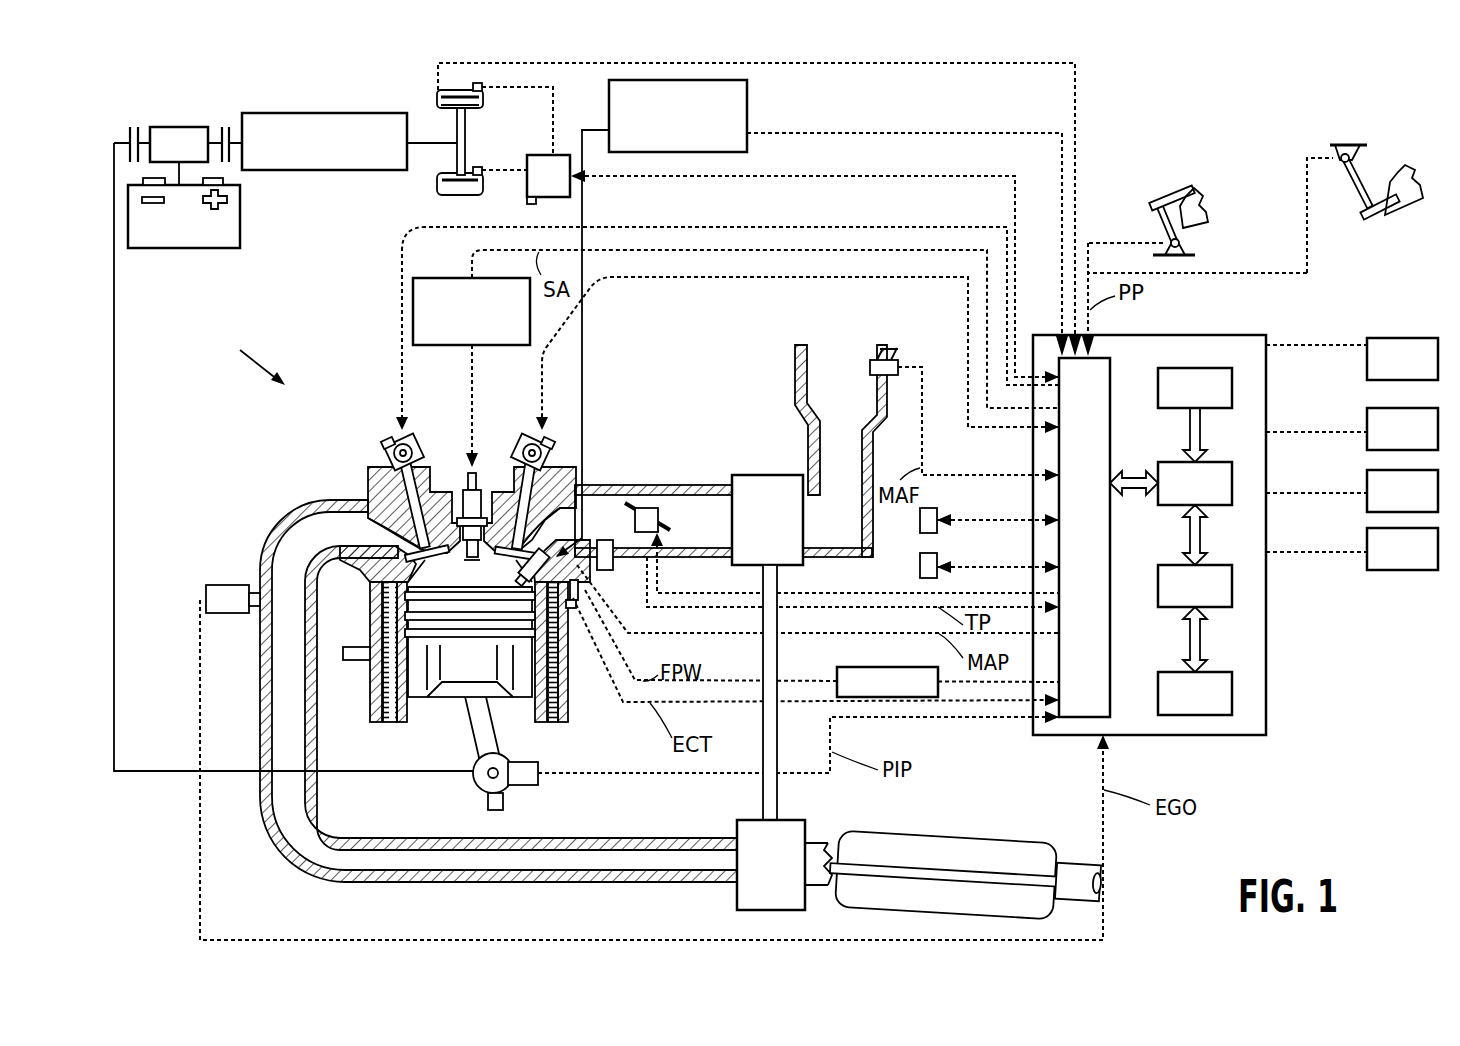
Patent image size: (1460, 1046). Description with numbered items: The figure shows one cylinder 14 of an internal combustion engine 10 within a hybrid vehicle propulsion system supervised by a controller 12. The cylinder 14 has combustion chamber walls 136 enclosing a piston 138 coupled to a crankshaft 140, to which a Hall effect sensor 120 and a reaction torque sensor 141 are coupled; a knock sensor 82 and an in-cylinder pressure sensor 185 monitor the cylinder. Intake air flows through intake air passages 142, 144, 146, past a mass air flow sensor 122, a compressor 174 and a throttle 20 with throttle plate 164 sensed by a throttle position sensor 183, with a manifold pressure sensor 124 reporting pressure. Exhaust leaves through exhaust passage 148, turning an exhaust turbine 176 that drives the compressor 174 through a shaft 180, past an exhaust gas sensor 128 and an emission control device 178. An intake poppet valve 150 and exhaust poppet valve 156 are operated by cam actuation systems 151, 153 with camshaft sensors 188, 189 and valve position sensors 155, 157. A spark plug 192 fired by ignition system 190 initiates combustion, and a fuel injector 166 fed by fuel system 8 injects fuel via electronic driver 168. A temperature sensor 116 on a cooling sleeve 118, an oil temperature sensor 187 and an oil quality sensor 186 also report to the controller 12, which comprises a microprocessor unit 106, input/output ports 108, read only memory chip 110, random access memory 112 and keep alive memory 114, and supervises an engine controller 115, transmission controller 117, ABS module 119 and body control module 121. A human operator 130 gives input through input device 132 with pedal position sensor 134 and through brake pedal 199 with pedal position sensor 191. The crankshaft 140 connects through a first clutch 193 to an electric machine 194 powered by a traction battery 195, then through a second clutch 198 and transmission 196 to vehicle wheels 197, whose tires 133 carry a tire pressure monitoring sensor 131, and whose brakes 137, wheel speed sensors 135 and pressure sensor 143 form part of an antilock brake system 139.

The high pressure fuel system 8 is at (747, 98).
The internal combustion engine 10 is at (252, 355).
The controller 12 is at (1268, 340).
The cylinder 14 is at (372, 590).
The throttle 20 is at (650, 505).
The knock sensor 82 is at (357, 660).
The microprocessor unit 106 is at (1234, 480).
The input/output ports 108 is at (1112, 372).
The read only memory chip 110 is at (1234, 382).
The random access memory 112 is at (1234, 590).
The keep alive memory 114 is at (1234, 692).
The engine controller 115 is at (1402, 359).
The temperature sensor 116 is at (592, 605).
The transmission controller 117 is at (1402, 429).
The cooling sleeve 118 is at (580, 612).
The ABS module 119 is at (1402, 491).
The Hall effect sensor 120 is at (532, 786).
The body control module 121 is at (1402, 549).
The mass air flow sensor 122 is at (890, 360).
The manifold pressure sensor 124 is at (603, 573).
The exhaust gas sensor 128 is at (206, 592).
The human operator 130 is at (1193, 192).
The tire pressure monitoring sensor 131 is at (437, 94).
The input device 132 is at (1160, 215).
The tire 133 is at (482, 103).
The pedal position sensor 134 is at (1185, 245).
The wheel speed sensor 135 is at (482, 87).
The combustion chamber walls 136 is at (383, 722).
The brake 137 is at (482, 170).
The piston 138 is at (448, 675).
The antilock brake system 139 is at (548, 176).
The crankshaft 140 is at (478, 787).
The reaction torque sensor 141 is at (496, 810).
The intake air passage 142 is at (857, 393).
The pressure sensor 143 is at (527, 200).
The intake air passage 144 is at (717, 531).
The intake air passage 146 is at (609, 531).
The exhaust passage 148 is at (349, 542).
The intake poppet valve 150 is at (490, 480).
The cam actuation system 151 is at (520, 440).
The cam actuation system 153 is at (418, 440).
The valve position sensor 155 is at (552, 450).
The exhaust poppet valve 156 is at (385, 500).
The valve position sensor 157 is at (386, 440).
The throttle plate 164 is at (593, 485).
The fuel injector 166 is at (534, 557).
The electronic driver 168 is at (837, 670).
The compressor 174 is at (750, 475).
The exhaust turbine 176 is at (737, 898).
The emission control device 178 is at (1010, 840).
The shaft 180 is at (780, 787).
The throttle position sensor 183 is at (647, 587).
The in-cylinder pressure sensor 185 is at (428, 588).
The oil quality sensor 186 is at (937, 555).
The temperature sensor 187 is at (937, 508).
The first camshaft sensor 188 is at (543, 443).
The second camshaft sensor 189 is at (395, 443).
The ignition system 190 is at (425, 278).
The pedal position sensor 191 is at (1340, 150).
The spark plug 192 is at (463, 478).
The first clutch 193 is at (130, 127).
The electric machine 194 is at (200, 127).
The traction battery 195 is at (205, 248).
The transmission 196 is at (312, 170).
The vehicle wheels 197 is at (466, 125).
The second clutch 198 is at (226, 127).
The brake pedal 199 is at (1368, 215).